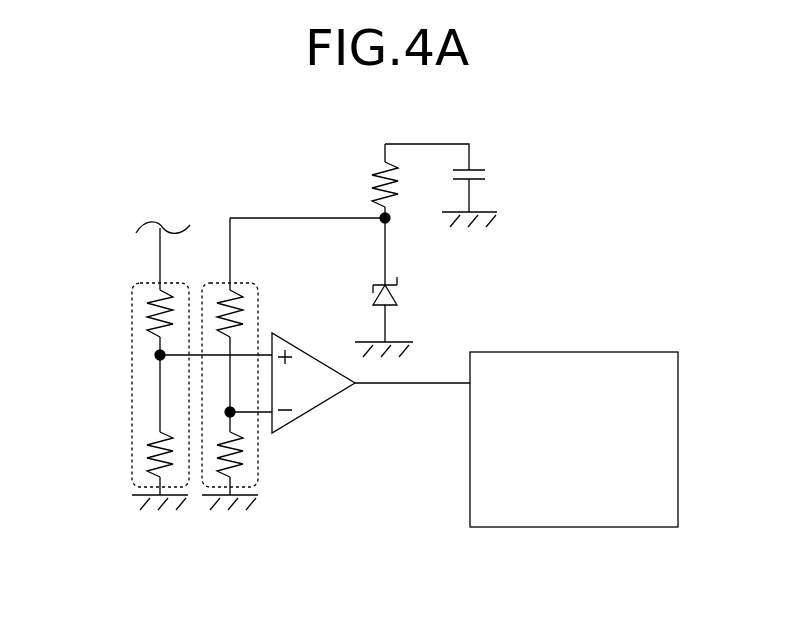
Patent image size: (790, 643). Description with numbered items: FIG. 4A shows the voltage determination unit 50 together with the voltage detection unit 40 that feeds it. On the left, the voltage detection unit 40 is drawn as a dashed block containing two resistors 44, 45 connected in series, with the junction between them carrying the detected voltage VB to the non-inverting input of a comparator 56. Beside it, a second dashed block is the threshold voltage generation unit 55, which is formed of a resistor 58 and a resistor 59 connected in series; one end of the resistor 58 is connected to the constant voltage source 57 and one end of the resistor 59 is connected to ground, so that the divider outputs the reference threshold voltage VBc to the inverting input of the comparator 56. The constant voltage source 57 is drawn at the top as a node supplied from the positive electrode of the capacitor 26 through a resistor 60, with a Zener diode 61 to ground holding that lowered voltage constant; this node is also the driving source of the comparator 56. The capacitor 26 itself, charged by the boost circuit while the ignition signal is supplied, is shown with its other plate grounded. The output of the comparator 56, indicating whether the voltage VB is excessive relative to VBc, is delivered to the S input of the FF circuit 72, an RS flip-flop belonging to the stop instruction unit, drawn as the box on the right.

The capacitor 26 is at (478, 166).
The voltage detection unit 40 is at (132, 309).
The resistor 44 is at (150, 303).
The resistor 45 is at (150, 475).
The voltage determination unit 50 is at (216, 147).
The threshold voltage generation unit 55 is at (258, 311).
The comparator 56 is at (305, 390).
The constant voltage source 57 is at (407, 232).
The resistor 58 is at (234, 325).
The resistor 59 is at (245, 467).
The resistor 60 is at (375, 170).
The Zener diode 61 is at (399, 300).
The FF circuit 72 is at (585, 372).